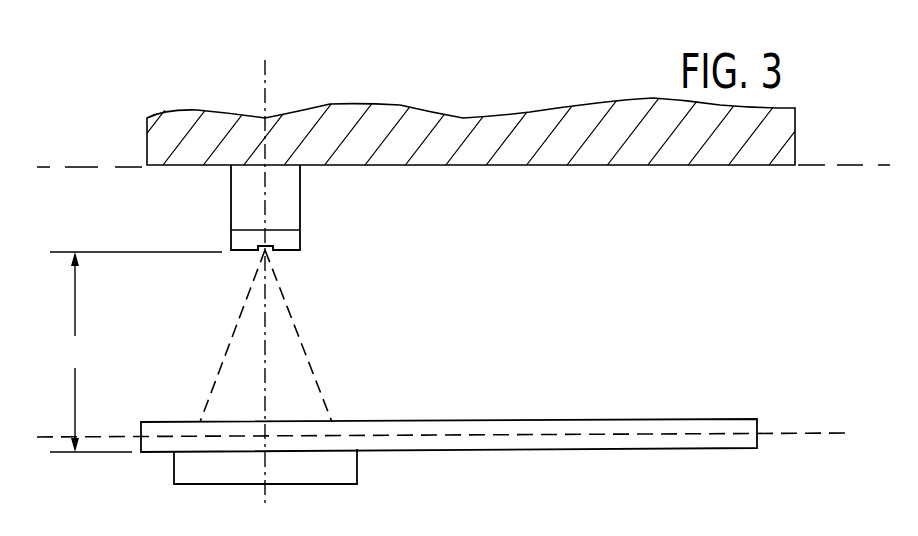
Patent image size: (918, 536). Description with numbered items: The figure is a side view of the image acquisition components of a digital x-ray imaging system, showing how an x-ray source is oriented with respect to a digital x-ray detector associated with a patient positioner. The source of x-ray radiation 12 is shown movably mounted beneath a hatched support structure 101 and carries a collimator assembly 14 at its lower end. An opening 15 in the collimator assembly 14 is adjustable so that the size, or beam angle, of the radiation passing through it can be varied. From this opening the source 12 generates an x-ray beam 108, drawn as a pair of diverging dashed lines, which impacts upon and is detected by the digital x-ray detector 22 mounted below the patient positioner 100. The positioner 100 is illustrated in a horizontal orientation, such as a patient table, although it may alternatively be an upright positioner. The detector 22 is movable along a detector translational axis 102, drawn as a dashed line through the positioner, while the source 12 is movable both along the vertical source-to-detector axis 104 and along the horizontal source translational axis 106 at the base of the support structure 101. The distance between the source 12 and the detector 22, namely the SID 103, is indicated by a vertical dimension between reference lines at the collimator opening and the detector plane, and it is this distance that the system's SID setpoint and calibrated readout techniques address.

The support structure 101 is at (468, 166).
The source translational axis 106 is at (85, 167).
The source-to-detector axis 104 is at (265, 64).
The source of x-ray radiation 12 is at (300, 205).
The collimator assembly 14 is at (231, 238).
The opening 15 is at (267, 243).
The x-ray beam 108 is at (297, 335).
The SID 103 is at (88, 329).
The patient positioner 100 is at (443, 422).
The detector translational axis 102 is at (820, 432).
The digital x-ray detector 22 is at (358, 463).